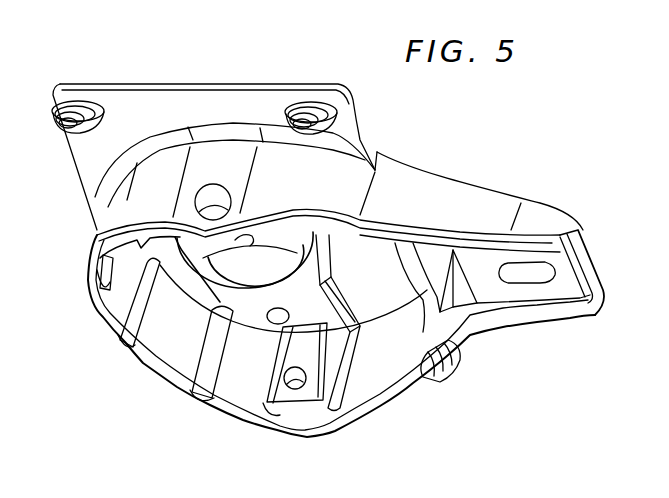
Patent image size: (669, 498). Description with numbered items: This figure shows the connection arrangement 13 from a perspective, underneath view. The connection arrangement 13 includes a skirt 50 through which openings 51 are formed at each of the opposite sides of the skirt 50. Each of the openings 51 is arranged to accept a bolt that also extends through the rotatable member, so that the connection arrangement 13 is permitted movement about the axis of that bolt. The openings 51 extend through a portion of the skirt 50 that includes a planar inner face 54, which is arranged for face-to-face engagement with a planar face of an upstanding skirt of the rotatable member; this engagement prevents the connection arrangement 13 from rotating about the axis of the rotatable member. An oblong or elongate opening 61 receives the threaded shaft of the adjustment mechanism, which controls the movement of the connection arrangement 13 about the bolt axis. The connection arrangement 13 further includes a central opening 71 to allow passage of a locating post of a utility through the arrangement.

The connection arrangement 13 is at (112, 60).
The skirt 50 is at (389, 398).
The openings 51 is at (207, 197).
The planar inner face 54 is at (306, 353).
The oblong or elongate opening 61 is at (545, 272).
The central opening 71 is at (300, 267).